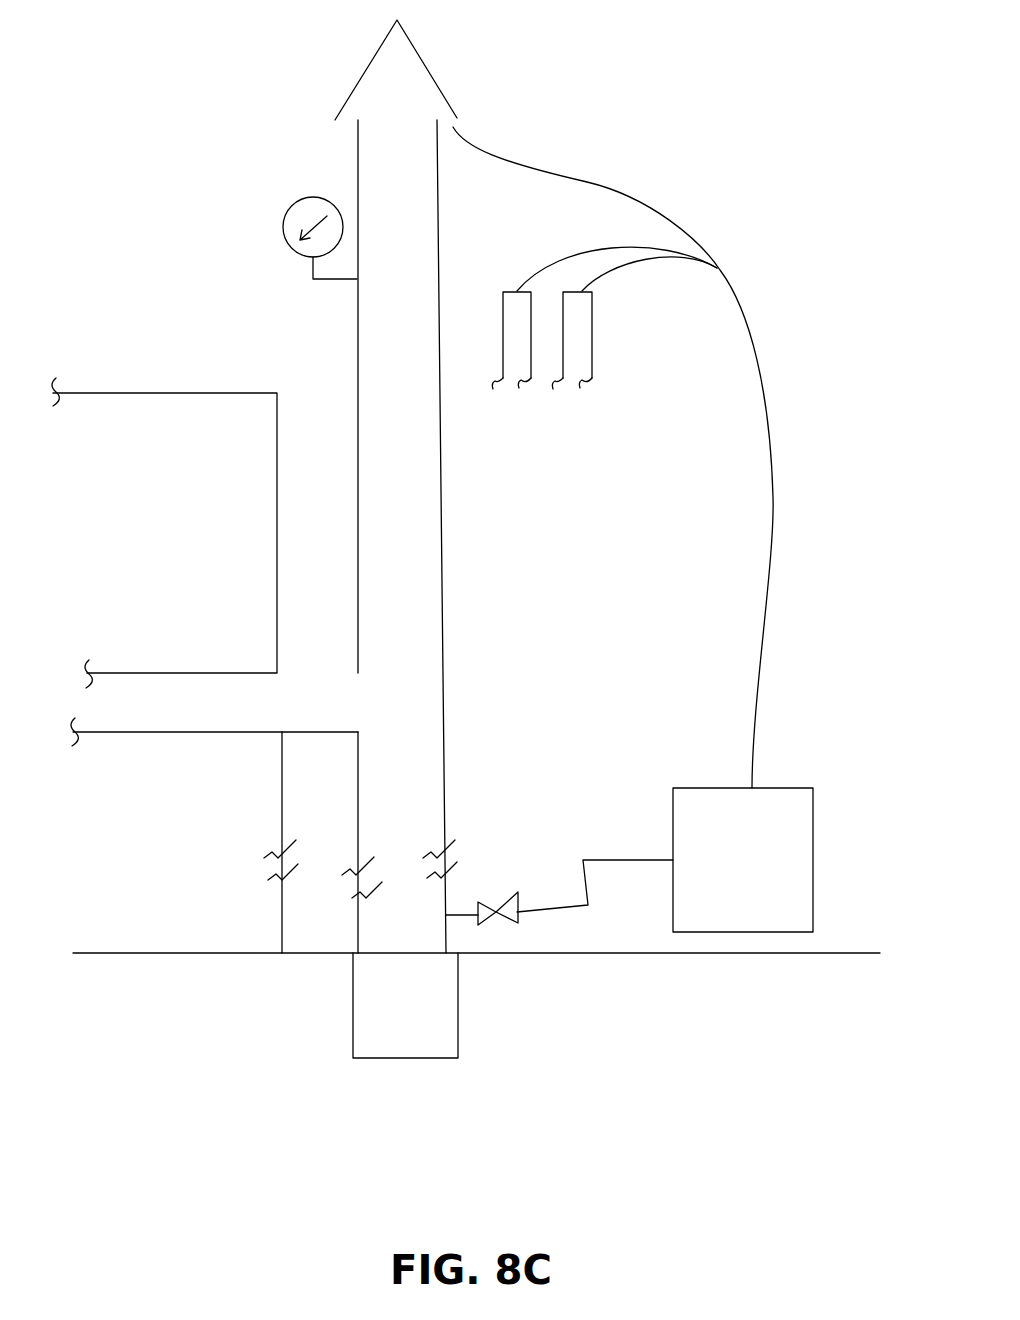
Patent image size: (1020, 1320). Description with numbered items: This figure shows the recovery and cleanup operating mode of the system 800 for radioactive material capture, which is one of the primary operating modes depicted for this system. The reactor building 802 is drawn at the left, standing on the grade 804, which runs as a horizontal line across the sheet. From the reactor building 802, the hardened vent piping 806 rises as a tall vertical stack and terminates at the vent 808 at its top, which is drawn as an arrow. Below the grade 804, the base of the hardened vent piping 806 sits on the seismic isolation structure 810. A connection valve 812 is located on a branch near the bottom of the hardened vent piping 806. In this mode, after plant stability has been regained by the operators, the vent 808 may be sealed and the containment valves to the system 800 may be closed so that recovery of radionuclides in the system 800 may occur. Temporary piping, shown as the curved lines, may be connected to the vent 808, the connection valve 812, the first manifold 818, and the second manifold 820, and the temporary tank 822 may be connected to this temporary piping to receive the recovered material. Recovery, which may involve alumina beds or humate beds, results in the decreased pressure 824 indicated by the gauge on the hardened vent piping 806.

The system for radioactive material capture 800 is at (744, 99).
The reactor building 802 is at (185, 501).
The grade 804 is at (145, 958).
The hardened vent piping 806 is at (348, 365).
The vent 808 is at (432, 60).
The seismic isolation structure 810 is at (465, 1044).
The connection valve 812 is at (497, 896).
The first manifold 818 is at (512, 397).
The second manifold 820 is at (573, 400).
The temporary tank 822 is at (775, 886).
The decreased pressure 824 is at (276, 232).